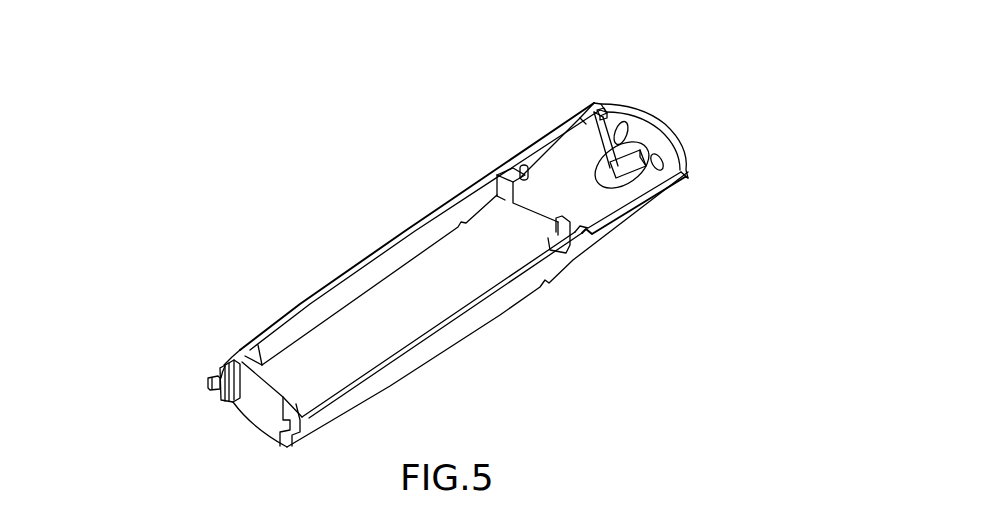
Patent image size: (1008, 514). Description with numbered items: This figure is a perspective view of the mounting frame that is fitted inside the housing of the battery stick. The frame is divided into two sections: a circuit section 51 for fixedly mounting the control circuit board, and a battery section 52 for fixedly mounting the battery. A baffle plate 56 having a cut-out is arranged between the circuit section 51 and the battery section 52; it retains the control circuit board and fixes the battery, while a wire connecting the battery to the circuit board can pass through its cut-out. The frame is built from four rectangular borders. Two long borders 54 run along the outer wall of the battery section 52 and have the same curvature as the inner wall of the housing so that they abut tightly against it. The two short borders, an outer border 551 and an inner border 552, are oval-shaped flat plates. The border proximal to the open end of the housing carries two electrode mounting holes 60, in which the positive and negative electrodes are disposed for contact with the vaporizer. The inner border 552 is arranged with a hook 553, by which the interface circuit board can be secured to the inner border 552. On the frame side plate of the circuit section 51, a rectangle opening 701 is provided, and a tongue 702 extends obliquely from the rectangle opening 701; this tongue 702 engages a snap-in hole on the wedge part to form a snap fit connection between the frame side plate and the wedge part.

The circuit section 51 is at (523, 309).
The battery section 52 is at (455, 242).
The long border 54 is at (415, 234).
The baffle plate 56 is at (452, 172).
The electrode mounting holes 60 is at (670, 78).
The outer border 551 is at (732, 150).
The inner border 552 is at (189, 316).
The hook 553 is at (139, 347).
The rectangle opening 701 is at (533, 114).
The tongue 702 is at (549, 65).